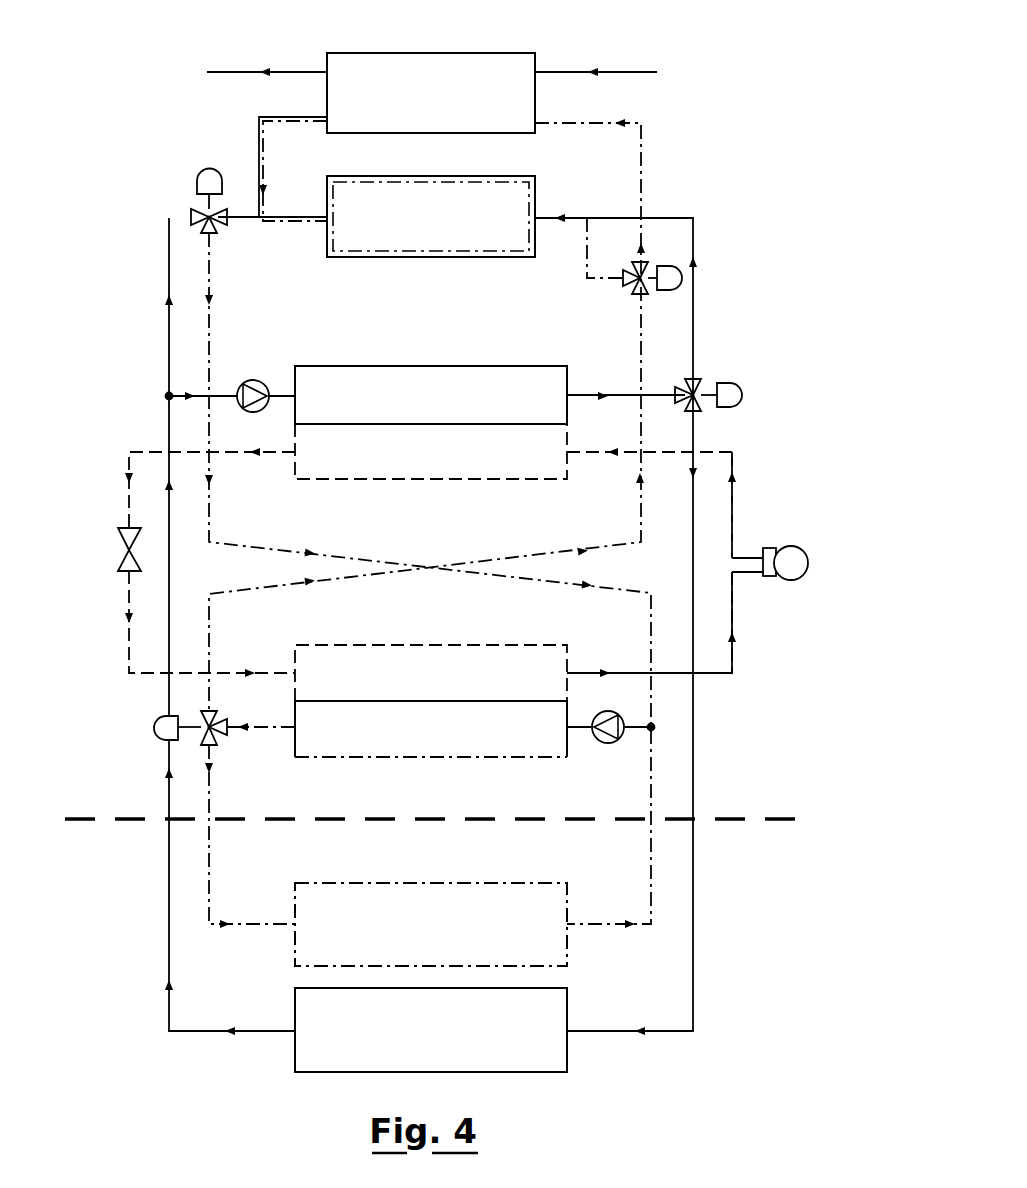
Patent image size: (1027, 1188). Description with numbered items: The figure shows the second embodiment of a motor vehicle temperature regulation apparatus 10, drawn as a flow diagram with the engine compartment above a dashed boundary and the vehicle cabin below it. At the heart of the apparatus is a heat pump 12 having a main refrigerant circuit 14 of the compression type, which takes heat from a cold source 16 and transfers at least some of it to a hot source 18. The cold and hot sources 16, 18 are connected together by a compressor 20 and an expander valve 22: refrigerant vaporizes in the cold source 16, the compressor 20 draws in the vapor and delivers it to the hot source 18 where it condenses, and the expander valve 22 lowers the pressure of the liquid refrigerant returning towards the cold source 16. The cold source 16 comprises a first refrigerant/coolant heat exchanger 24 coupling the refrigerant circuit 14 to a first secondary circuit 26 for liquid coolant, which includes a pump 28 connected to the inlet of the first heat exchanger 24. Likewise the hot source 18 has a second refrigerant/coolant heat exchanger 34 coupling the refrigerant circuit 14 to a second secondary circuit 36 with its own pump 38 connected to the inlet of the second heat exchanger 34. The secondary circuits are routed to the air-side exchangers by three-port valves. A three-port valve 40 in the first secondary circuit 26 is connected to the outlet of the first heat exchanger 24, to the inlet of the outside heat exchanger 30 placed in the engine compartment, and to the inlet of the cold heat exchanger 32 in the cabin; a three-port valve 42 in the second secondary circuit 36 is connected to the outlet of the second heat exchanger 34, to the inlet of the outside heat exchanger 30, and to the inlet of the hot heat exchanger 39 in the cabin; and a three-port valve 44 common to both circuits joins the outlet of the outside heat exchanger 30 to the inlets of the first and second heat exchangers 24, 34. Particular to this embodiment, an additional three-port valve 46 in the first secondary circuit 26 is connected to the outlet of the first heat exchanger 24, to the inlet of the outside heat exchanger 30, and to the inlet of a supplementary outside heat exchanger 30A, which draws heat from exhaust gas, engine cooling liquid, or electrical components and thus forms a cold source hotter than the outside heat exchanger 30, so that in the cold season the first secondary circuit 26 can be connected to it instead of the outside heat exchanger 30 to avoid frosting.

The temperature regulation apparatus 10 is at (724, 91).
The heat pump 12 is at (760, 512).
The main refrigerant circuit 14 is at (731, 673).
The cold source 16 is at (434, 636).
The hot source 18 is at (436, 490).
The compressor 20 is at (803, 580).
The expander valve 22 is at (126, 543).
The first refrigerant/coolant heat exchanger 24 is at (431, 729).
The first secondary circuit 26 is at (278, 732).
The pump 28 is at (598, 744).
The outside heat exchanger 30 is at (431, 216).
The supplementary outside heat exchanger 30A is at (431, 93).
The cold heat exchanger 32 is at (431, 924).
The second refrigerant/coolant heat exchanger 34 is at (431, 395).
The second secondary circuit 36 is at (580, 394).
The pump 38 is at (258, 381).
The hot heat exchanger 39 is at (431, 1030).
The three-port valve 40 is at (218, 726).
The three-port valve 42 is at (697, 382).
The three-port valve 44 is at (205, 215).
The additional three-port valve 46 is at (628, 284).